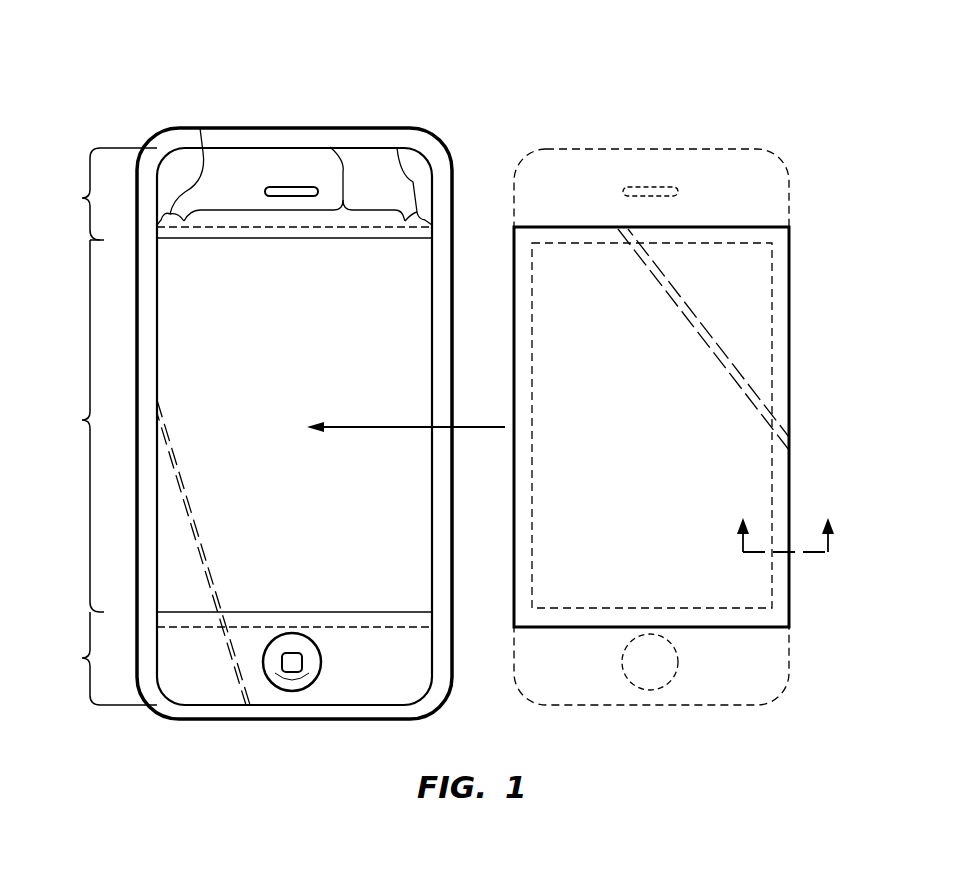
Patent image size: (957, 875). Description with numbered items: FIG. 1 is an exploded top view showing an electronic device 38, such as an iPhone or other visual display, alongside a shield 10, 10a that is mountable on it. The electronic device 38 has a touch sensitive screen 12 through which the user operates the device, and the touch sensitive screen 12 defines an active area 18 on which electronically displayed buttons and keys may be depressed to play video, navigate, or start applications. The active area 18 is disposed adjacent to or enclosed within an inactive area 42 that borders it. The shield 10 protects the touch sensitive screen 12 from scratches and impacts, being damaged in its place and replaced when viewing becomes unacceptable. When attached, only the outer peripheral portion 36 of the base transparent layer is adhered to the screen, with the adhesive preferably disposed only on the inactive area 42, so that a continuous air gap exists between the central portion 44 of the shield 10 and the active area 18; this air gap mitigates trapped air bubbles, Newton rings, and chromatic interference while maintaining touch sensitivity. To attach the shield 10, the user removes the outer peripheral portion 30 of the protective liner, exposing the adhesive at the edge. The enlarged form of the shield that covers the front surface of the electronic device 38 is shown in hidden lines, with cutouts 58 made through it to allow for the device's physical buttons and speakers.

The shield 10 is at (793, 105).
The shield 10a is at (685, 431).
The touch sensitive screen 12 is at (190, 316).
The active area 18 is at (327, 106).
The outer peripheral portion of the protective liner 30 is at (767, 618).
The outer peripheral portion of the base transparent layer 36 is at (745, 617).
The electronic device 38 is at (255, 110).
The inactive area 42 is at (397, 106).
The central portion of the shield 44 is at (750, 297).
The cutouts 58 is at (660, 187).